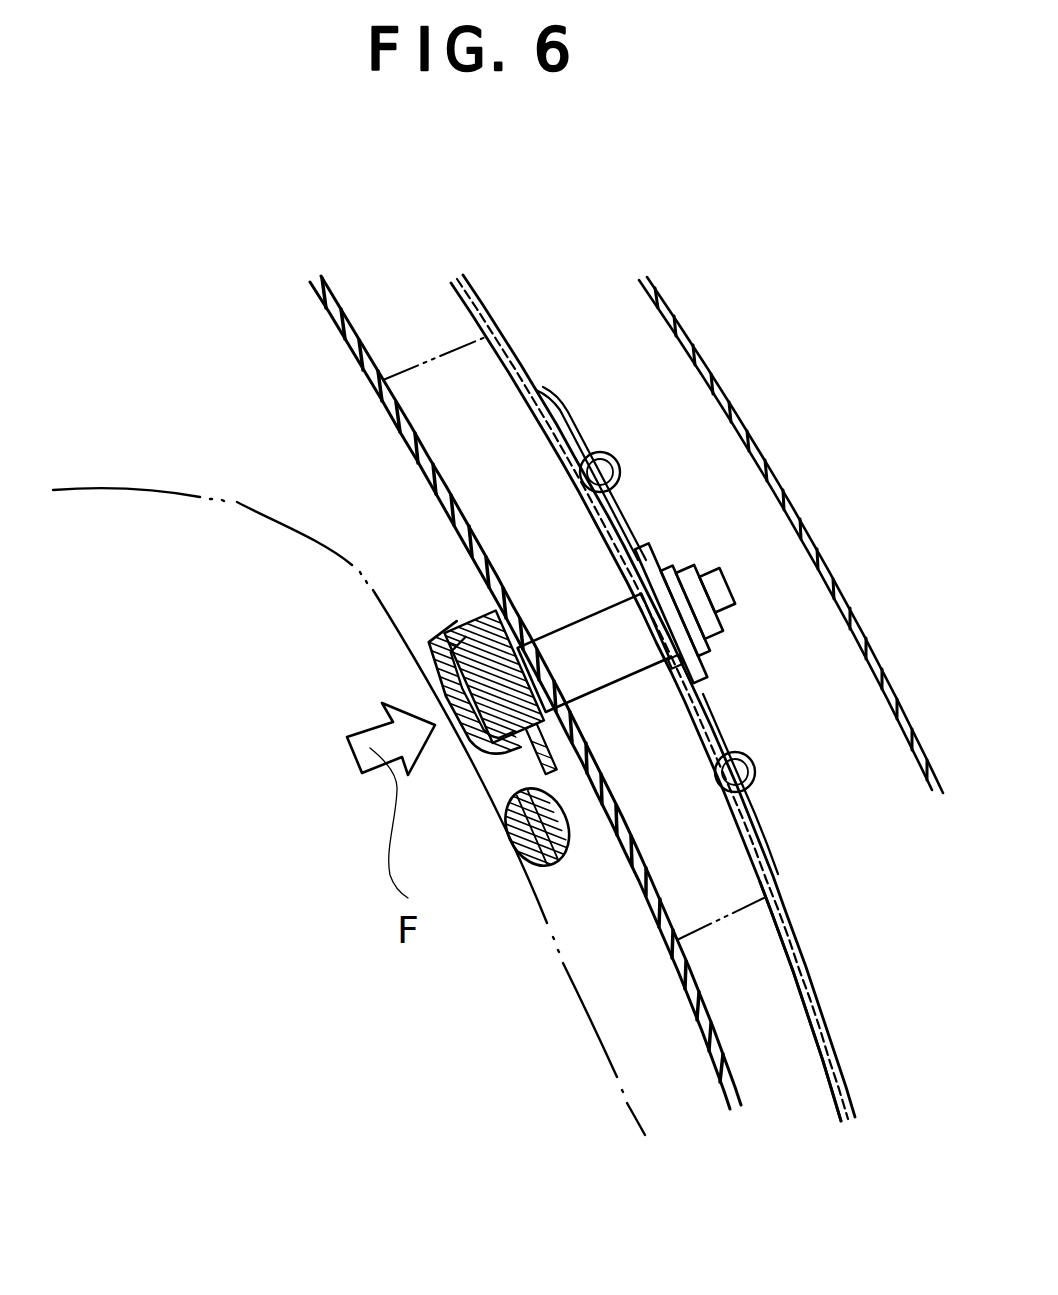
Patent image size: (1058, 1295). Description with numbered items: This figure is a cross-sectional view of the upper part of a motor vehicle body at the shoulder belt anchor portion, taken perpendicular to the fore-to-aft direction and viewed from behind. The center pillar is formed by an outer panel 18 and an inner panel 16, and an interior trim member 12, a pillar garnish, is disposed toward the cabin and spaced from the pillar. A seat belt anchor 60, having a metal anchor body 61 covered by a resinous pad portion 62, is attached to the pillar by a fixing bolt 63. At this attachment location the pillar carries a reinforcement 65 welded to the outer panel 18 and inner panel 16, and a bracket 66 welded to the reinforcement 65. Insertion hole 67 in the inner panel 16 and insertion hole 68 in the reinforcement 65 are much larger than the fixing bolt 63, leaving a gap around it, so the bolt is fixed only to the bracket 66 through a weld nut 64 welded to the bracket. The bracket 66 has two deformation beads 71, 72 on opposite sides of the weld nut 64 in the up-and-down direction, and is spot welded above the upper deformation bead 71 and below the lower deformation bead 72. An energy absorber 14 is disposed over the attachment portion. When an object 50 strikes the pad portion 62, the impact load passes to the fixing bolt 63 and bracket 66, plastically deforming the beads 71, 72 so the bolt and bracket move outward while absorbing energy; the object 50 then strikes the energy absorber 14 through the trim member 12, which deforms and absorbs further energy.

The interior trim member 12 is at (323, 318).
The energy absorber 14 is at (402, 372).
The inner panel 16 is at (847, 1087).
The outer panel 18 is at (785, 482).
The object 50 is at (132, 488).
The seat belt anchor 60 is at (433, 638).
The anchor body 61 is at (563, 773).
The pad portion 62 is at (455, 633).
The fixing bolt 63 is at (556, 612).
The weld nut 64 is at (657, 560).
The reinforcement 65 is at (508, 352).
The bracket 66 is at (707, 707).
The insertion hole 67 is at (667, 680).
The insertion hole 68 is at (633, 590).
The upper deformation bead 71 is at (617, 467).
The lower deformation bead 72 is at (757, 767).